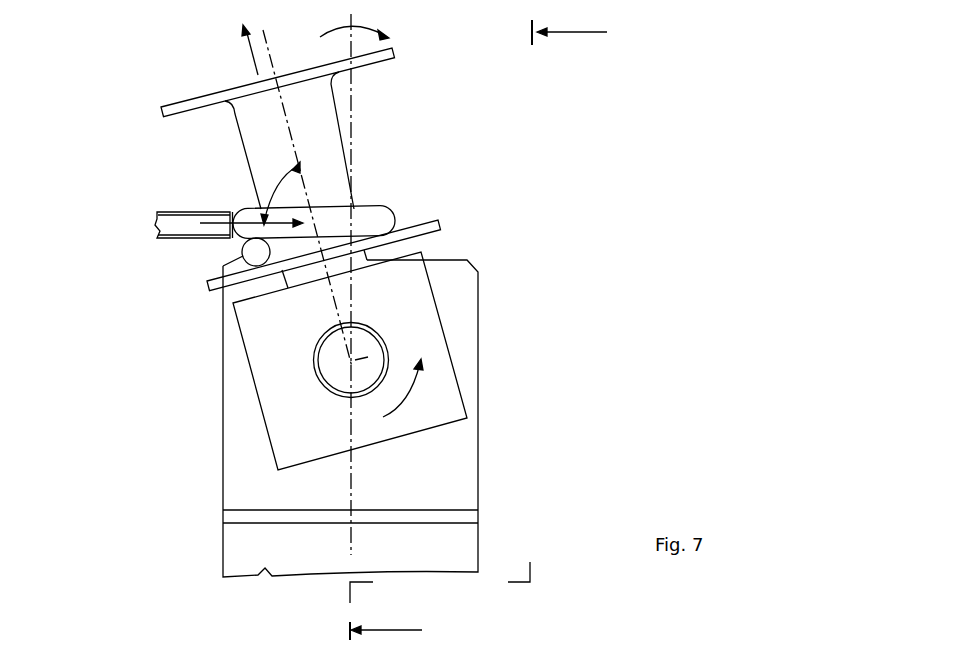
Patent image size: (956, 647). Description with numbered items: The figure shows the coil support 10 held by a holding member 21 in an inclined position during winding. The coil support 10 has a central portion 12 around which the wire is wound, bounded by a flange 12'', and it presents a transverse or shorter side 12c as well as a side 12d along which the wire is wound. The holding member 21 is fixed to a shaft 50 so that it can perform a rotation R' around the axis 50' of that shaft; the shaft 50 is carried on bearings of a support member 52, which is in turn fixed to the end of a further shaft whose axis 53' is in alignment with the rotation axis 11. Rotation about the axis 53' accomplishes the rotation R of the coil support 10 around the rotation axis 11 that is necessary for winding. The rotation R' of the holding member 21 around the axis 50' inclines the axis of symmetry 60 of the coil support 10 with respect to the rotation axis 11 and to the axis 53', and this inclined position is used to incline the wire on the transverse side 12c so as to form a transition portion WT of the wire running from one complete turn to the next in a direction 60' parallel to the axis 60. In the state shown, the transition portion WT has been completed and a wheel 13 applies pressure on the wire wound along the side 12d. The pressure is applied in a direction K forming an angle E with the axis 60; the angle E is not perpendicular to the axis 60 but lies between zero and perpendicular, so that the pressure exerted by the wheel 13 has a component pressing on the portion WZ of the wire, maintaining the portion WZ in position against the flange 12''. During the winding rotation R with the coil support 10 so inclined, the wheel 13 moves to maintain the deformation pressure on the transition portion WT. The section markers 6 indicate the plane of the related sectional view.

The section line VI-VI 6 is at (577, 32).
The coil support 10 is at (344, 142).
The rotation axis 11 is at (353, 107).
The central portion 12 is at (331, 82).
The transverse side 12c is at (250, 120).
The side 12d is at (246, 157).
The flange 12'' is at (386, 251).
The wheel 13 is at (165, 225).
The holding member 21 is at (415, 307).
The shaft 50 is at (258, 360).
The axis 50' is at (270, 409).
The support member 52 is at (448, 463).
The axis 53' is at (301, 507).
The axis of symmetry 60 is at (307, 193).
The direction 60' is at (215, 50).
The angle E is at (273, 194).
The pressure direction K is at (228, 222).
The rotation R is at (373, 24).
The rotation R' is at (455, 388).
The transition portion WT is at (384, 218).
The portion of wire WZ is at (243, 252).